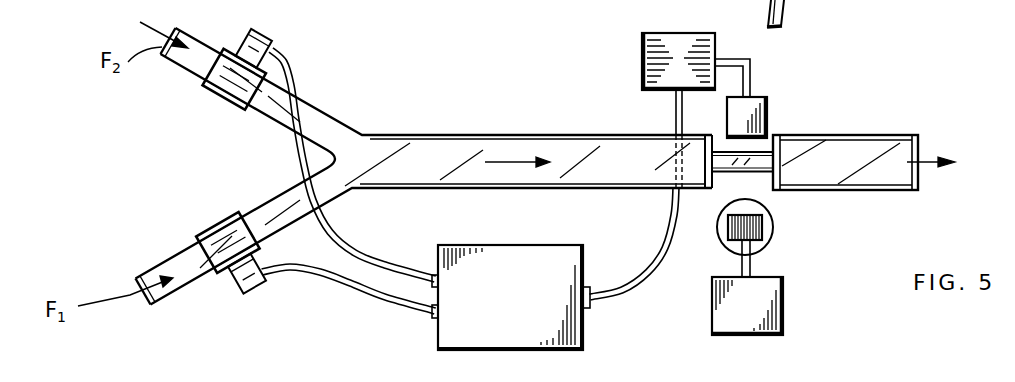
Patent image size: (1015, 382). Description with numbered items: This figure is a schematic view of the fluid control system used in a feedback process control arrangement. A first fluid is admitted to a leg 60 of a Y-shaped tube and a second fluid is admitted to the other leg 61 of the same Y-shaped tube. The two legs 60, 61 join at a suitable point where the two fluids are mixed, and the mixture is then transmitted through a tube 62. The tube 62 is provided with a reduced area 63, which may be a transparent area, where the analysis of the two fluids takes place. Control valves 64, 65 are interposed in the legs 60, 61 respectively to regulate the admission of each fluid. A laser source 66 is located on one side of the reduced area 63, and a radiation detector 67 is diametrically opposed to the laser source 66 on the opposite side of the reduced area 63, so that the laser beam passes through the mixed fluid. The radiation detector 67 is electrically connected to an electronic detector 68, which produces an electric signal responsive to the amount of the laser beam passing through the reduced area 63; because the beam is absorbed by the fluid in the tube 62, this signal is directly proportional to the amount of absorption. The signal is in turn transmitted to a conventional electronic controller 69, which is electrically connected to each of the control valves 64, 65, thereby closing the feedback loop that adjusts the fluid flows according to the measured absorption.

The leg of Y-shaped tube 60 is at (170, 256).
The leg of Y-shaped tube 61 is at (194, 80).
The tube 62 is at (458, 135).
The reduced area 63 is at (755, 176).
The control valve 64 is at (243, 284).
The control valve 65 is at (270, 45).
The laser source 66 is at (762, 235).
The radiation detector 67 is at (768, 118).
The electronic detector 68 is at (644, 50).
The electronic controller 69 is at (437, 333).